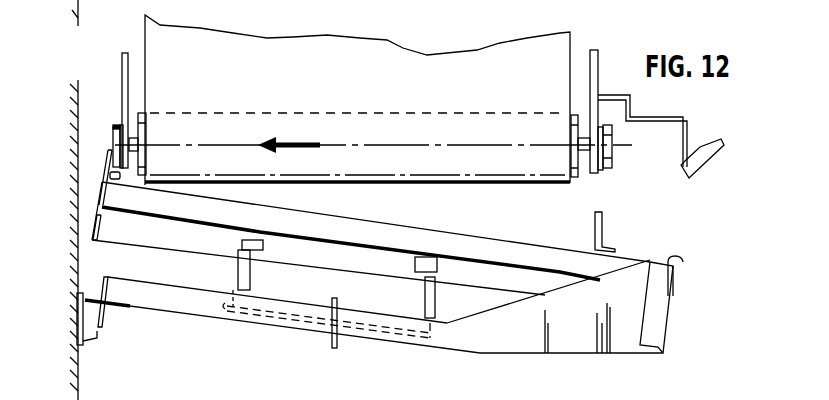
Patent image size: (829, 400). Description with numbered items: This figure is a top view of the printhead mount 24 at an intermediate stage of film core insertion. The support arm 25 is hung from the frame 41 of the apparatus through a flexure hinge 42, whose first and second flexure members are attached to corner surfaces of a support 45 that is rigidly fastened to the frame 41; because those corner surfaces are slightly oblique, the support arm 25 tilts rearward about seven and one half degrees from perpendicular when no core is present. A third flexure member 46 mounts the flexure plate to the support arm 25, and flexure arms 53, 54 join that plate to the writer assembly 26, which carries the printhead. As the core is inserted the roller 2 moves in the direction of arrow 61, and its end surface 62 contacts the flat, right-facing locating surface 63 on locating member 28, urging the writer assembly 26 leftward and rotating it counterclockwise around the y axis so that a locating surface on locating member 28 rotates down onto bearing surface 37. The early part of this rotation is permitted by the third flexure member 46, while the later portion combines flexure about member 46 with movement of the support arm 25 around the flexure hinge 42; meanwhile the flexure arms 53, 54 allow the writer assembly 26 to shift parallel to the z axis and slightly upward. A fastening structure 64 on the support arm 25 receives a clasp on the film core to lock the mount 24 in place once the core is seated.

The roller 2 is at (577, 177).
The mount 24 is at (686, 325).
The support arm 25 is at (617, 343).
The writer assembly 26 is at (418, 238).
The locating member 28 is at (108, 164).
The bearing surface 37 is at (108, 137).
The frame 41 is at (75, 272).
The flexure hinge 42 is at (97, 308).
The support 45 is at (97, 332).
The third flexure member 46 is at (337, 340).
The flexure arm 53 is at (238, 275).
The flexure arm 54 is at (440, 293).
The arrow 61 is at (285, 138).
The end surface 62 is at (117, 123).
The locating surface 63 is at (104, 176).
The fastening structure 64 is at (677, 277).